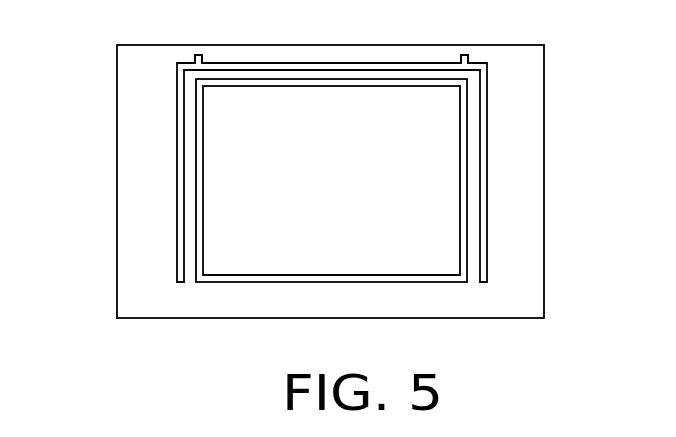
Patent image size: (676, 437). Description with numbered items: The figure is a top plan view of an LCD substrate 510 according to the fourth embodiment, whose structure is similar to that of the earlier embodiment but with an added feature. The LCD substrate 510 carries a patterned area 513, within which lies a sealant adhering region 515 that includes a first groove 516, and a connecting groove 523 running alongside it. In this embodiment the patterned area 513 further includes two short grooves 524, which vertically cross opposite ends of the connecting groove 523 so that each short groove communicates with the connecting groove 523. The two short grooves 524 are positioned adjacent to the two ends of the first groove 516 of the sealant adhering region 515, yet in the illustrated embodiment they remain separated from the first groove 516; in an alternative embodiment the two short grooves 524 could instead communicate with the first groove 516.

The LCD substrate 510 is at (361, 27).
The patterned area 513 is at (490, 63).
The sealant adhering region 515 is at (441, 287).
The first groove 516 is at (428, 88).
The connecting groove 523 is at (222, 64).
The short grooves 524 is at (190, 77).